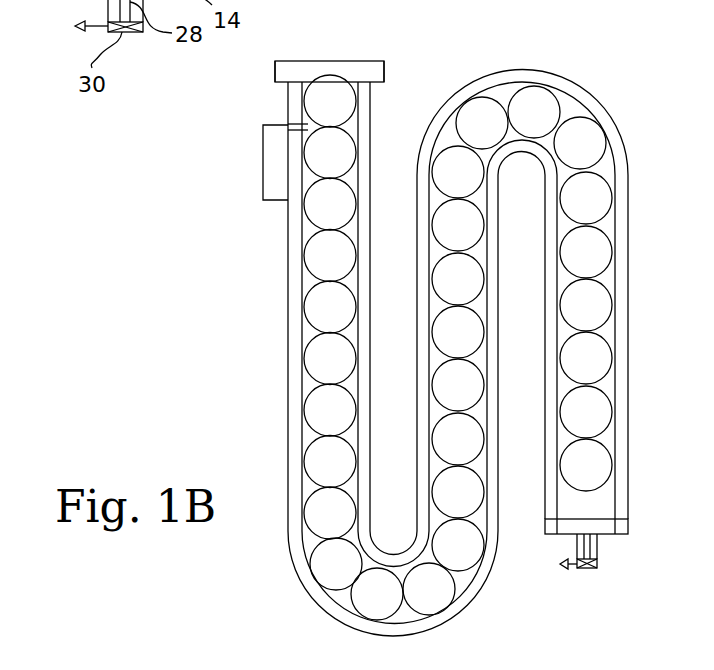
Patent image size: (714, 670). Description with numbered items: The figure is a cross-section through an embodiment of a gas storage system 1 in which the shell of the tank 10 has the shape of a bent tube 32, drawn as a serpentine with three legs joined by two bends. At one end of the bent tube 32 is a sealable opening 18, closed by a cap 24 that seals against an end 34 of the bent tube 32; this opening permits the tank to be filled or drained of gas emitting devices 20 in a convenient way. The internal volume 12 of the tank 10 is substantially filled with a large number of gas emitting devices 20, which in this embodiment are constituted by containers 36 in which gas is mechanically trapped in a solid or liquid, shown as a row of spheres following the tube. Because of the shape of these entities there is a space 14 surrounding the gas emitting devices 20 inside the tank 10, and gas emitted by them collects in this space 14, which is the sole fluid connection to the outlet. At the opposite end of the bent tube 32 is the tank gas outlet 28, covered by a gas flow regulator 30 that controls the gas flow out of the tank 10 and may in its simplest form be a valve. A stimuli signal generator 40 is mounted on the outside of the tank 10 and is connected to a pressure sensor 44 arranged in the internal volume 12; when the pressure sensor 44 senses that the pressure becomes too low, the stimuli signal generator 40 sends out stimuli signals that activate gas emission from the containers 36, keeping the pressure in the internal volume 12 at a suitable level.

The gas storage system 1 is at (150, 298).
The tank 10 is at (291, 388).
The internal volume 12 is at (620, 332).
The space 14 is at (572, 112).
The sealable opening 18 is at (345, 74).
The gas emitting devices 20 is at (594, 257).
The cap 24 is at (275, 79).
The tank gas outlet 28 is at (598, 562).
The gas flow regulator 30 is at (576, 568).
The bent tube 32 is at (301, 573).
The end of the bent tube 34 is at (385, 76).
The containers 36 is at (543, 100).
The stimuli signal generator 40 is at (272, 182).
The pressure sensor 44 is at (281, 126).